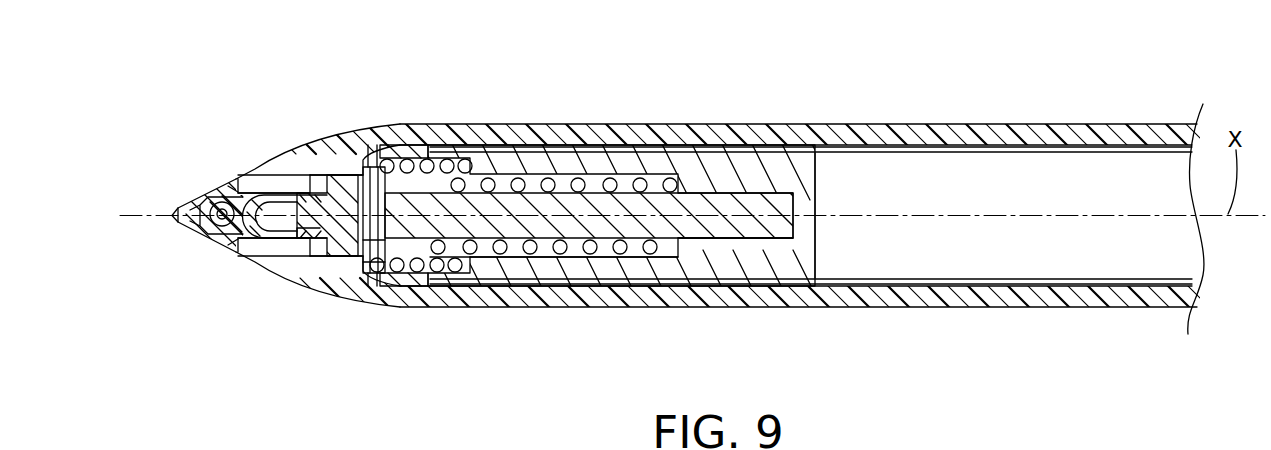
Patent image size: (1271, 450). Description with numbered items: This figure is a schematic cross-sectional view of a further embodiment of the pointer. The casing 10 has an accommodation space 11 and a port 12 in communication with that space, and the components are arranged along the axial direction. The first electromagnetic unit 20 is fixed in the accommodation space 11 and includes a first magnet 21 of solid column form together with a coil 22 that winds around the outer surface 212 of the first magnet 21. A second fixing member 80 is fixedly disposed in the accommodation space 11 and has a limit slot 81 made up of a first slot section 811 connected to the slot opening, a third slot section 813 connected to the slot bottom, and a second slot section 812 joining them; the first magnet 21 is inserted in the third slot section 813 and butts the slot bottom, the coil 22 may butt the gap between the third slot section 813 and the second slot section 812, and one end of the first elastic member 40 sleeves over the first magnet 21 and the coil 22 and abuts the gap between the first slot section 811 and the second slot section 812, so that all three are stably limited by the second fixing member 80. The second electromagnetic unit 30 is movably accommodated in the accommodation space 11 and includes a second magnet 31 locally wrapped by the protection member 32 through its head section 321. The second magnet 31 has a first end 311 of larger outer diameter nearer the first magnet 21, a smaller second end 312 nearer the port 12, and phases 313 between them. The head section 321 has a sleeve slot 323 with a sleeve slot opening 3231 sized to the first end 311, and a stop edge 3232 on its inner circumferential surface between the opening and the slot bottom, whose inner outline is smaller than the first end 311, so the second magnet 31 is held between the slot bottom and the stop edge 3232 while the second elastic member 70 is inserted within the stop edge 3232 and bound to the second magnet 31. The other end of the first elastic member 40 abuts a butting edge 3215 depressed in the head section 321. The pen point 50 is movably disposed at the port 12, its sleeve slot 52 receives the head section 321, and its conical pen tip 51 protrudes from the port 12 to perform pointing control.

The casing 10 is at (1083, 123).
The accommodation space 11 is at (418, 127).
The port 12 is at (265, 177).
The first electromagnetic unit 20 is at (618, 157).
The first magnet 21 is at (730, 200).
The coil 22 is at (640, 172).
The outer surface 212 is at (554, 159).
The second electromagnetic unit 30 is at (212, 202).
The second magnet 31 is at (350, 185).
The first end 311 is at (440, 160).
The second end 312 is at (255, 177).
The phase 313 is at (292, 178).
The protection member 32 is at (294, 212).
The head section 321 is at (265, 238).
The sleeve slot 323 is at (376, 165).
The butting edge 3215 is at (375, 127).
The sleeve slot opening 3231 is at (403, 280).
The stop edge 3232 is at (360, 238).
The first elastic member 40 is at (497, 150).
The pen point 50 is at (188, 233).
The pen tip 51 is at (180, 216).
The sleeve slot 52 is at (212, 205).
The second elastic member 70 is at (308, 232).
The second fixing member 80 is at (822, 236).
The limit slot 81 is at (611, 324).
The first slot section 811 is at (452, 266).
The second slot section 812 is at (540, 262).
The third slot section 813 is at (735, 301).